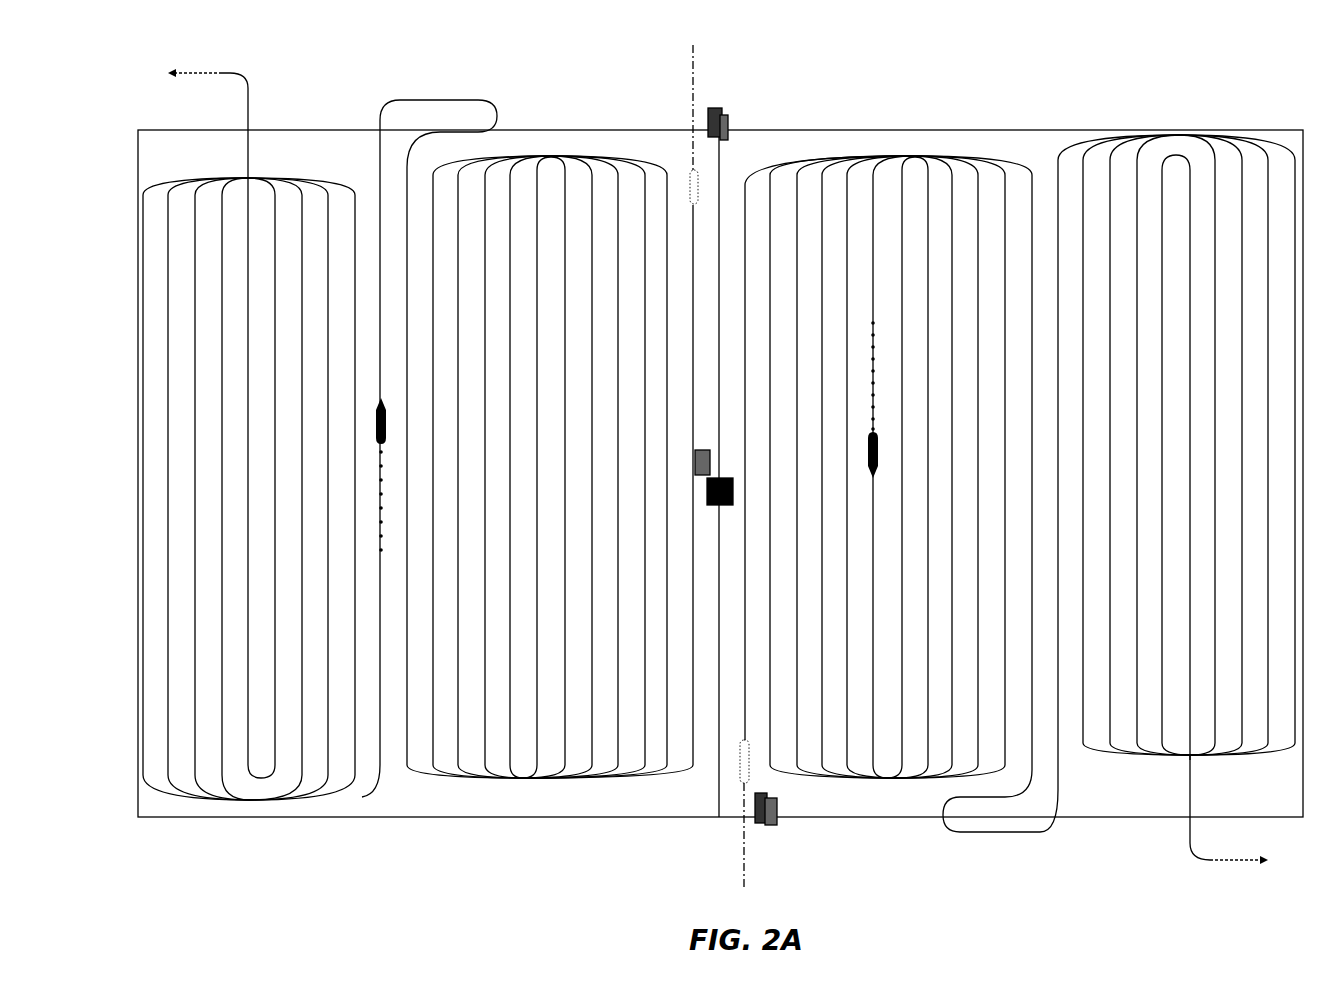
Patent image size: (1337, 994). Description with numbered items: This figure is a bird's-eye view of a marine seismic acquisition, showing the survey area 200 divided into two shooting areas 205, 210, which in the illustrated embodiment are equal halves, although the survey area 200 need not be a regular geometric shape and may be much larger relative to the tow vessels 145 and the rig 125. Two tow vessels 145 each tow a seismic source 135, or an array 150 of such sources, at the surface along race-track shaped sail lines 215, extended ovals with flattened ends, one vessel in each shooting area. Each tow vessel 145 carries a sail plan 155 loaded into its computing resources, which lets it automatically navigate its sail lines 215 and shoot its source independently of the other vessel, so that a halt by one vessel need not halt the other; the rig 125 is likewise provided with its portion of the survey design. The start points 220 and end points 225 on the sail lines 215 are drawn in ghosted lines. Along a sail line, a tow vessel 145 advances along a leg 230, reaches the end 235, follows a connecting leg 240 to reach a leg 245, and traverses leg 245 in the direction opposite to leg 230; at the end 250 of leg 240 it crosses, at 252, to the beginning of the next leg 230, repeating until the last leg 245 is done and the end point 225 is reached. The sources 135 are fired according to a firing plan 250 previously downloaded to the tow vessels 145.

The survey area 200 is at (528, 48).
The shooting area 205 is at (412, 455).
The shooting area 210 is at (1022, 130).
The sail lines 215 is at (240, 178).
The start point 220 is at (700, 168).
The end point 225 is at (210, 68).
The leg 230 is at (650, 167).
The end 235 is at (643, 172).
The leg 240 is at (598, 157).
The leg 245 is at (517, 172).
The end 250 is at (729, 116).
The traverse 252 is at (582, 784).
The sail plan 155 is at (712, 105).
The array 150 is at (700, 452).
The tow vessel 145 is at (386, 442).
The seismic source 135 is at (385, 478).
The rig 125 is at (729, 480).